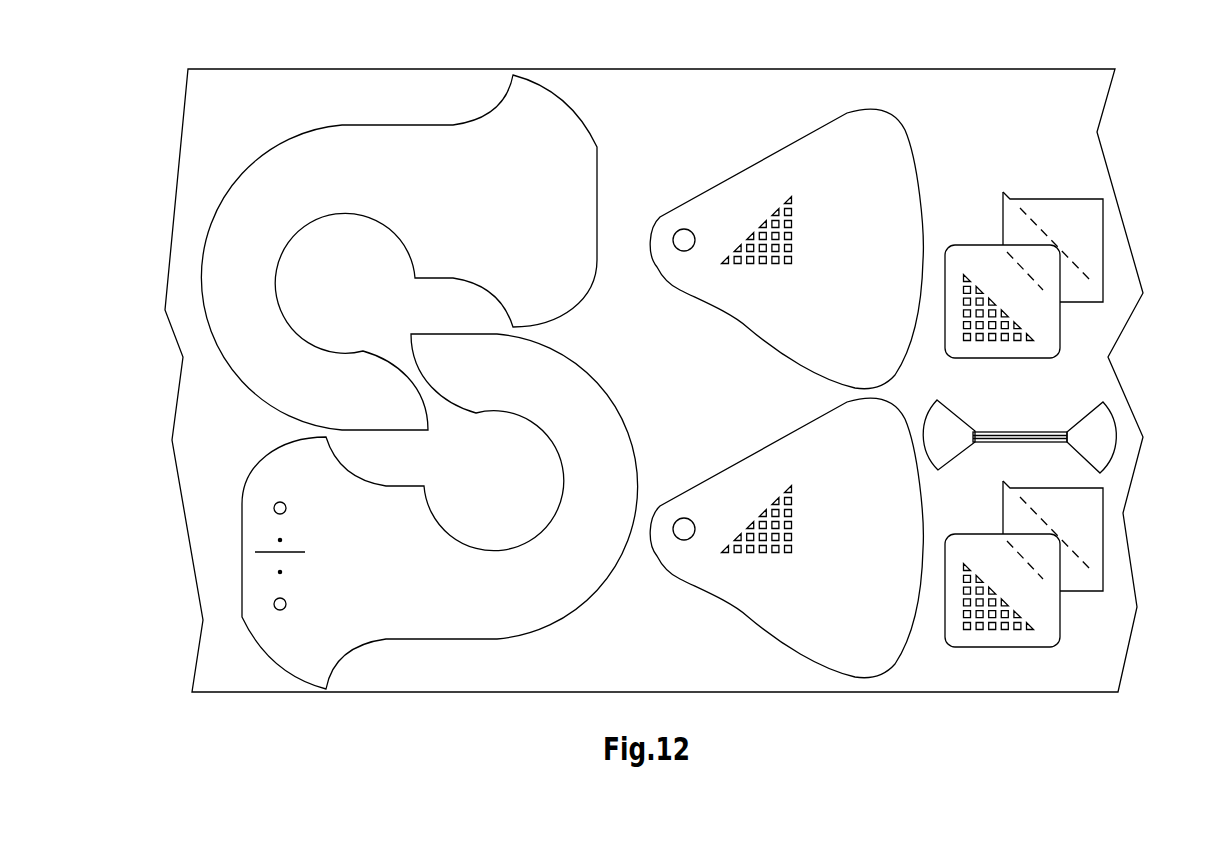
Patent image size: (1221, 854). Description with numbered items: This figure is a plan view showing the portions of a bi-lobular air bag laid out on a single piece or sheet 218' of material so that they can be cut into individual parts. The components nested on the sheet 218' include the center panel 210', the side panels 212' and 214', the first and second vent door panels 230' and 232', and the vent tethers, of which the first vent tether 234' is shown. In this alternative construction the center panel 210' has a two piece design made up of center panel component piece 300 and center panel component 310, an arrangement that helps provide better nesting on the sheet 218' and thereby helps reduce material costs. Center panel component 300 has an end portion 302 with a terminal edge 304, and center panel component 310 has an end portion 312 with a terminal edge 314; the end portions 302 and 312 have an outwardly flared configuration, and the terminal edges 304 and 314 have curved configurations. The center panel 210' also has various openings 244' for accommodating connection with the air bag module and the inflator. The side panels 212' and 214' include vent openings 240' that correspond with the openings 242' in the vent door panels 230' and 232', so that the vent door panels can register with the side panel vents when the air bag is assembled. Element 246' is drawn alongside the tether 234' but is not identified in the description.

The sheet 218' is at (654, 355).
The center panel 210' is at (419, 355).
The center panel component piece 300 is at (447, 160).
The end portion 302 is at (540, 133).
The terminal edge 304 is at (598, 150).
The end portion 312 is at (293, 472).
The terminal edge 314 is at (238, 562).
The openings 244' is at (326, 587).
The center panel component 310 is at (423, 587).
The side panel 212' is at (816, 239).
The side panel 214' is at (786, 573).
The vent openings 240' is at (802, 375).
The first vent door panel 230' is at (1024, 245).
The second vent door panel 232' is at (1079, 568).
The openings 242' is at (1088, 496).
The first vent tether 234' is at (995, 427).
The bow-tie part 246' is at (1144, 437).